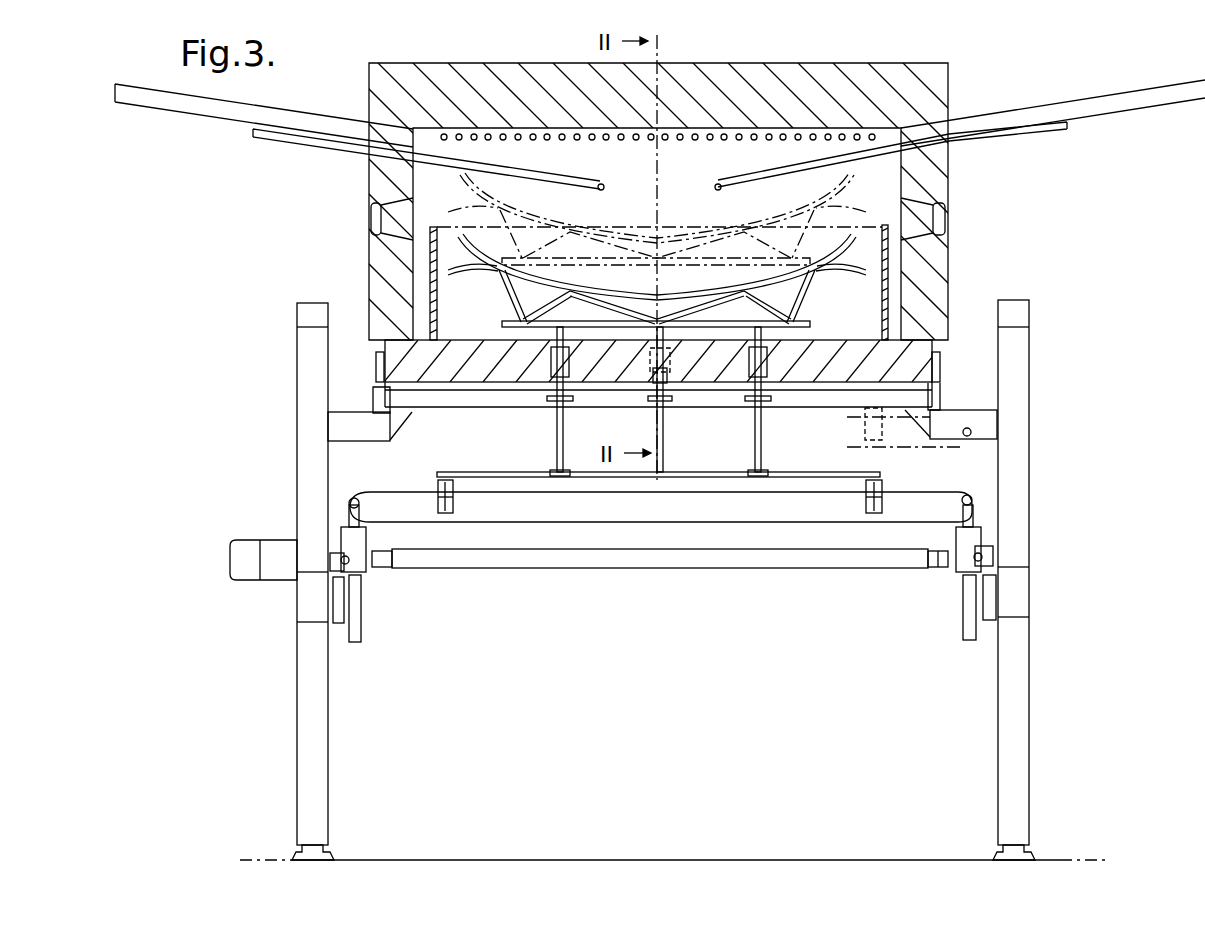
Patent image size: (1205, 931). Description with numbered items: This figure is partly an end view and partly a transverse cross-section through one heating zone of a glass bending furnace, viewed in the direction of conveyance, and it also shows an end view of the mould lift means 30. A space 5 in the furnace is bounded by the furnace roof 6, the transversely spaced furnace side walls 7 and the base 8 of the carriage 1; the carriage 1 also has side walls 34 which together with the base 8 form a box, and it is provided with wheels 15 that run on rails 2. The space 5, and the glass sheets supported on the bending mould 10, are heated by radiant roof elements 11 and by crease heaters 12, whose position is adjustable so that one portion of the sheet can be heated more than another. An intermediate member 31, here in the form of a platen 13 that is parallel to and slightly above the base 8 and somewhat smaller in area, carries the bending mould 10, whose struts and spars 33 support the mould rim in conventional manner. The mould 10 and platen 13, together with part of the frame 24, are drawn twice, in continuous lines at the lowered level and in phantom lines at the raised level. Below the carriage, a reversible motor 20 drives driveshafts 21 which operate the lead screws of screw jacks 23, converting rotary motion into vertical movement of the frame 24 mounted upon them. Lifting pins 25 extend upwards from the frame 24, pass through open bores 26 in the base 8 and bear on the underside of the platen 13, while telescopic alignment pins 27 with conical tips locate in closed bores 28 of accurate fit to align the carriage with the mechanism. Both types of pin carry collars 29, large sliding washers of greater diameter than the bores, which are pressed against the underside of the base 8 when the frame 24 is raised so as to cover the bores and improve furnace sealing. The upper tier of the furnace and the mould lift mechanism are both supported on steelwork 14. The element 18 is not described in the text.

The carriage 1 is at (866, 340).
The rails 2 is at (376, 392).
The space 5 is at (738, 170).
The furnace roof 6 is at (518, 95).
The furnace side walls 7 is at (392, 190).
The base 8 is at (905, 352).
The bending mould 10 is at (866, 247).
The radiant roof elements 11 is at (822, 128).
The crease heaters 12 is at (718, 183).
The platen 13 is at (502, 324).
The steelwork 14 is at (1020, 660).
The wheels 15 is at (376, 370).
The guide bar 18 is at (392, 138).
The motor 20 is at (242, 560).
The driveshafts 21 is at (535, 560).
The screw jacks 23 is at (368, 572).
The frame 24 is at (915, 505).
The lifting pins 25 is at (557, 454).
The bores 26 is at (560, 360).
The alignment pins 27 is at (663, 455).
The closed bores 28 is at (662, 373).
The collars 29 is at (652, 401).
The mould lift means 30 is at (665, 578).
The intermediate member 31 is at (512, 312).
The struts and spars 33 is at (805, 286).
The side walls 34 is at (432, 258).